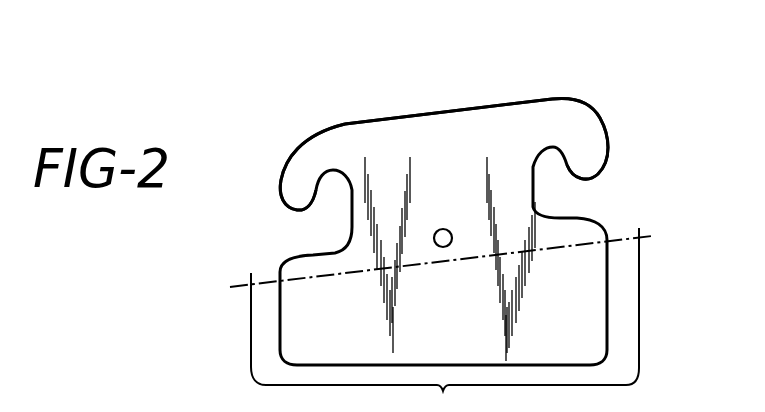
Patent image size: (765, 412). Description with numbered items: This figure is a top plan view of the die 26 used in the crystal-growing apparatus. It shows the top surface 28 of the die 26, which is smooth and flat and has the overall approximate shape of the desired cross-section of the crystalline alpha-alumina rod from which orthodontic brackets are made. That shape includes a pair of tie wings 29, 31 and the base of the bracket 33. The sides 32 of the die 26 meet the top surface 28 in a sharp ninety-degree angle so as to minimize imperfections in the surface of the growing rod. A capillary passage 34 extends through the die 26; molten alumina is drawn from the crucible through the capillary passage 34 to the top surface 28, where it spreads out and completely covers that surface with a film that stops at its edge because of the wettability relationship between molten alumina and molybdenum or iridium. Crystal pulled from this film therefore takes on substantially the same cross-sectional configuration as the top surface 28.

The die 26 is at (607, 80).
The top surface 28 is at (456, 175).
The tie wing 29 is at (593, 132).
The tie wing 31 is at (297, 172).
The sides 32 is at (393, 119).
The base of the bracket 33 is at (445, 320).
The capillary passage 34 is at (446, 247).